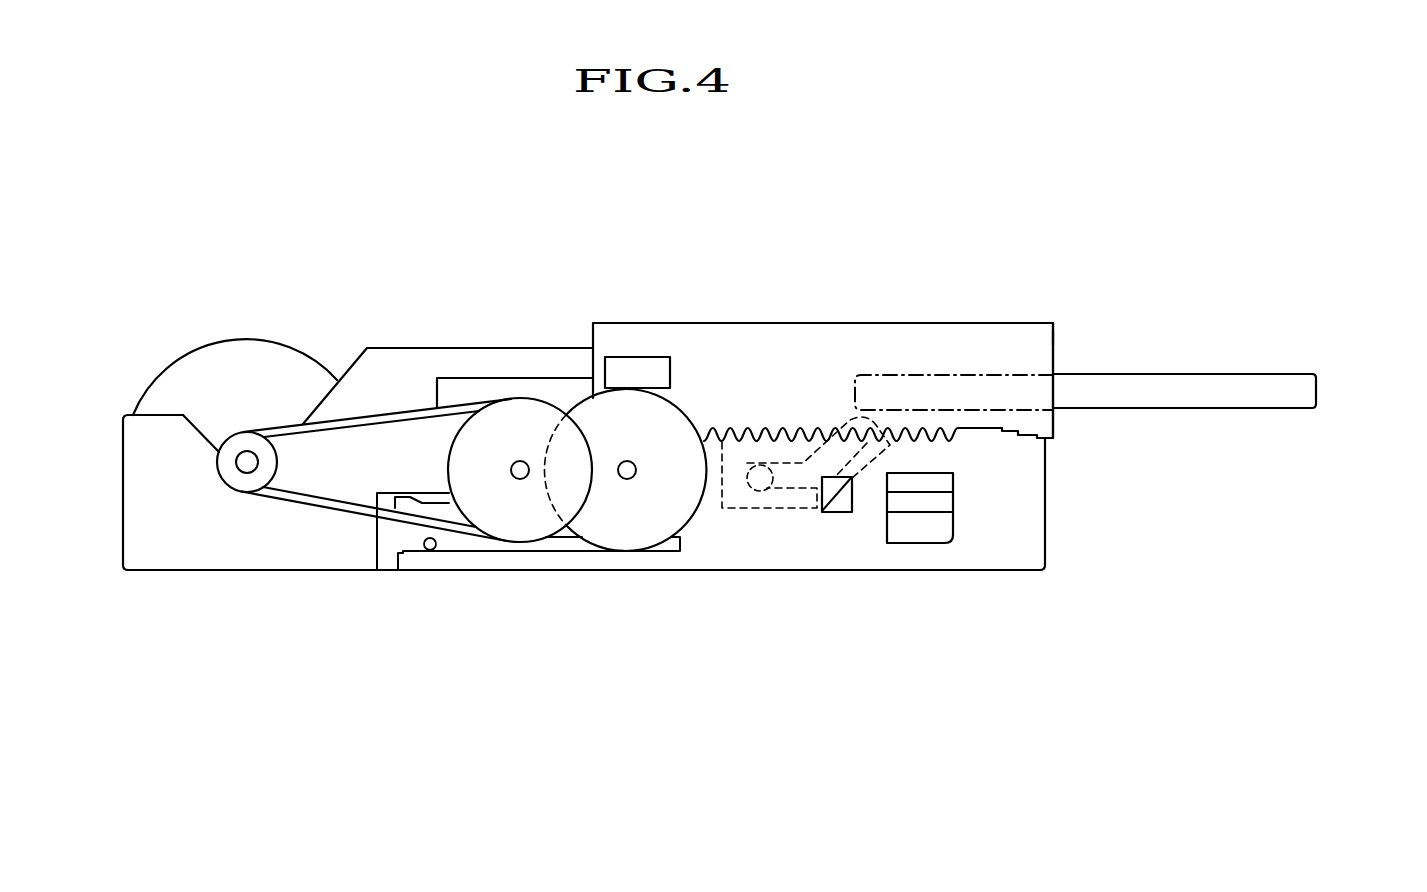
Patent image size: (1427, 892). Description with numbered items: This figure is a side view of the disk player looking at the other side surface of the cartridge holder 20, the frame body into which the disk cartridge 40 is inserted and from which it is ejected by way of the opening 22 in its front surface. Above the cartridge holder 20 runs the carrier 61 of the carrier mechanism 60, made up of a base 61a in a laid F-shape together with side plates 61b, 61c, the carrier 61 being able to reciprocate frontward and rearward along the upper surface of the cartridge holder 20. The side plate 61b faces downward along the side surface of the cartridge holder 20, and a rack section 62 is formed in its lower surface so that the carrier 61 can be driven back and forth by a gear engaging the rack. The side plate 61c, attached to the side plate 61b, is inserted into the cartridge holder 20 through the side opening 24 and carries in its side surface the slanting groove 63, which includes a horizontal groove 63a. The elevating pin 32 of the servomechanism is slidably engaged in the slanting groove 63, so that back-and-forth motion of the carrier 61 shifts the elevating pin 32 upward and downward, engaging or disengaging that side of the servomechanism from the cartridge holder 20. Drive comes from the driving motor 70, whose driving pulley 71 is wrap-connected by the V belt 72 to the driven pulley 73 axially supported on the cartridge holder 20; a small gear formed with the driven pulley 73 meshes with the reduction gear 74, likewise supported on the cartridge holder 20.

The cartridge holder 20 is at (1047, 510).
The opening 22 is at (1057, 388).
The side opening 24 is at (512, 393).
The elevating pin 32 is at (758, 480).
The disk cartridge 40 is at (1302, 398).
The carrier mechanism 60 is at (421, 335).
The carrier 61 is at (965, 305).
The base 61a is at (1032, 322).
The side plate 61b is at (1055, 338).
The side plate 61c is at (808, 505).
The rack section 62 is at (772, 427).
The slanting groove 63 is at (832, 453).
The horizontal groove 63a is at (797, 477).
The driving motor 70 is at (225, 360).
The driving pulley 71 is at (222, 470).
The V belt 72 is at (288, 505).
The driven pulley 73 is at (505, 532).
The reduction gear 74 is at (657, 547).